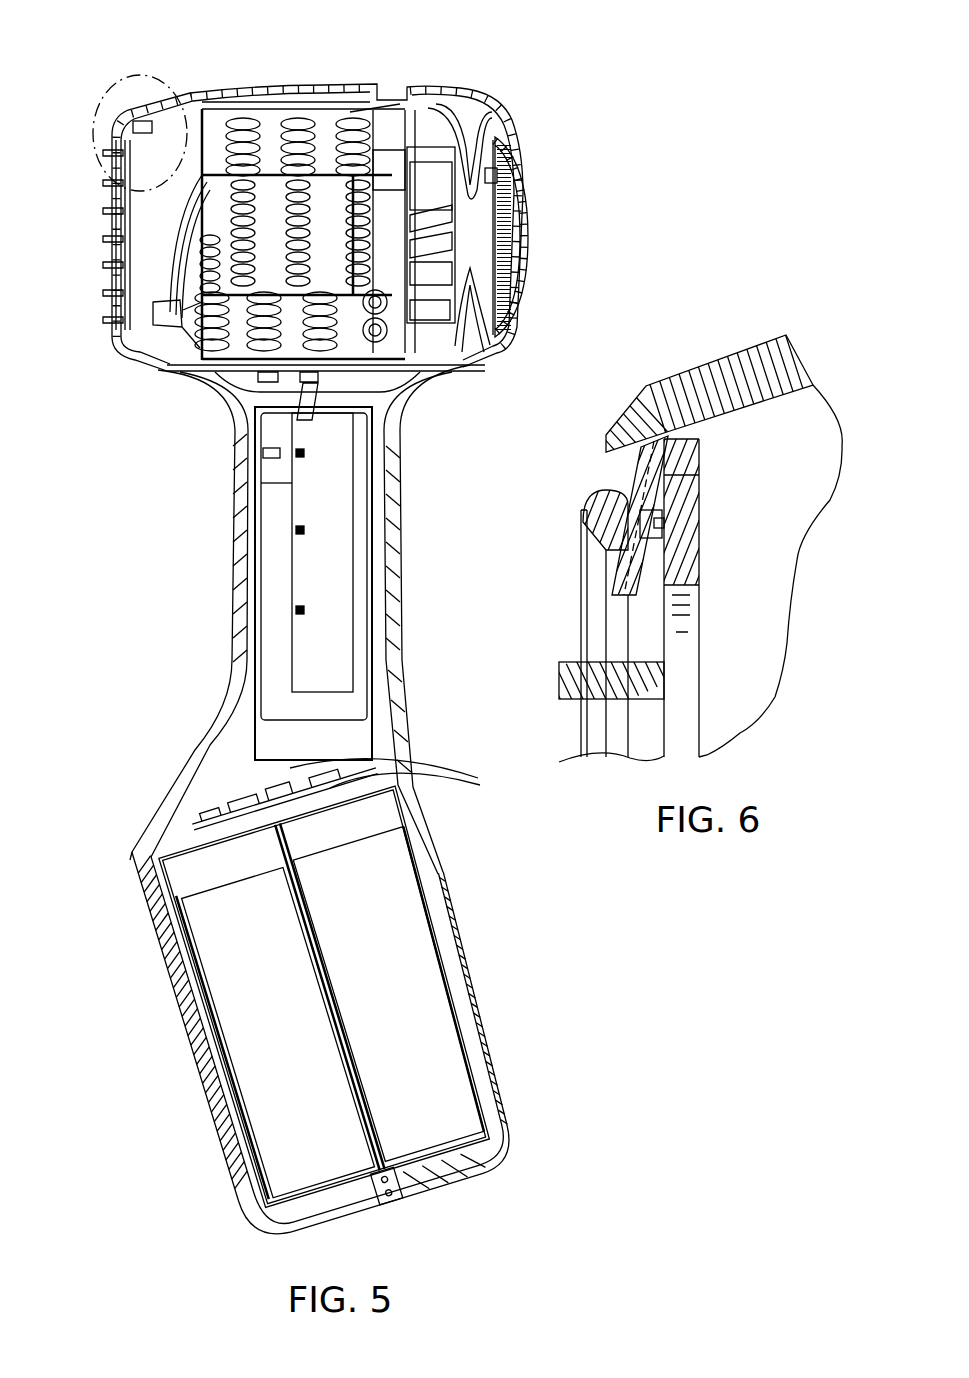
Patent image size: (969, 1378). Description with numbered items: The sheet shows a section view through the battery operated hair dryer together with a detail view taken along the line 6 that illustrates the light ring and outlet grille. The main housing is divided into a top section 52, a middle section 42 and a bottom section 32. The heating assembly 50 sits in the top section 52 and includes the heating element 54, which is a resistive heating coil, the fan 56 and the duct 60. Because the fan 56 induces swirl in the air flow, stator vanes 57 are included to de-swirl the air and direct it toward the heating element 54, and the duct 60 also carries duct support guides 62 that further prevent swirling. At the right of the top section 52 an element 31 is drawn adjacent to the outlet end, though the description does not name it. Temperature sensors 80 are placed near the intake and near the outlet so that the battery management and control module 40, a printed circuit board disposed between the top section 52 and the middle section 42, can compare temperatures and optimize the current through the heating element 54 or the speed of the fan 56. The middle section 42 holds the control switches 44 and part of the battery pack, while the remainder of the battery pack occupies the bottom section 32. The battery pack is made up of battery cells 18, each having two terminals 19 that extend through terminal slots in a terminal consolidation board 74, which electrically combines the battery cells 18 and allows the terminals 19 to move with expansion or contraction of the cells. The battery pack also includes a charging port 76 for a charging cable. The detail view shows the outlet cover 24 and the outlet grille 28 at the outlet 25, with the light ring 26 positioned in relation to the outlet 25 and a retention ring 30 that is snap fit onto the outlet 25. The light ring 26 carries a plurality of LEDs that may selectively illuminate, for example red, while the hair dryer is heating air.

In FIG. 5, the detail view line 6 is at (130, 72).
In FIG. 5, the battery cell 18 is at (270, 755).
In FIG. 5, the terminals 19 is at (396, 777).
In FIG. 6, the outlet cover 24 is at (752, 352).
In FIG. 5, the outlet 25 is at (142, 232).
In FIG. 6, the outlet 25 is at (654, 522).
In FIG. 6, the light ring 26 is at (685, 526).
In FIG. 6, the outlet grille 28 is at (570, 680).
In FIG. 6, the retention ring 30 is at (590, 514).
In FIG. 5, the dial 31 is at (527, 235).
In FIG. 5, the bottom section 32 is at (112, 852).
In FIG. 5, the battery management and control module 40 is at (468, 374).
In FIG. 5, the middle section 42 is at (437, 402).
In FIG. 5, the control switches 44 is at (298, 608).
In FIG. 5, the heating assembly 50 is at (240, 345).
In FIG. 5, the top section 52 is at (568, 95).
In FIG. 5, the heating element 54 is at (242, 128).
In FIG. 5, the fan 56 is at (437, 185).
In FIG. 5, the stator vanes 57 is at (363, 112).
In FIG. 5, the duct 60 is at (270, 110).
In FIG. 5, the duct support guides 62 is at (222, 185).
In FIG. 5, the terminal consolidation board 74 is at (155, 857).
In FIG. 5, the charging port 76 is at (396, 1203).
In FIG. 5, the temperature sensors 80 is at (150, 120).